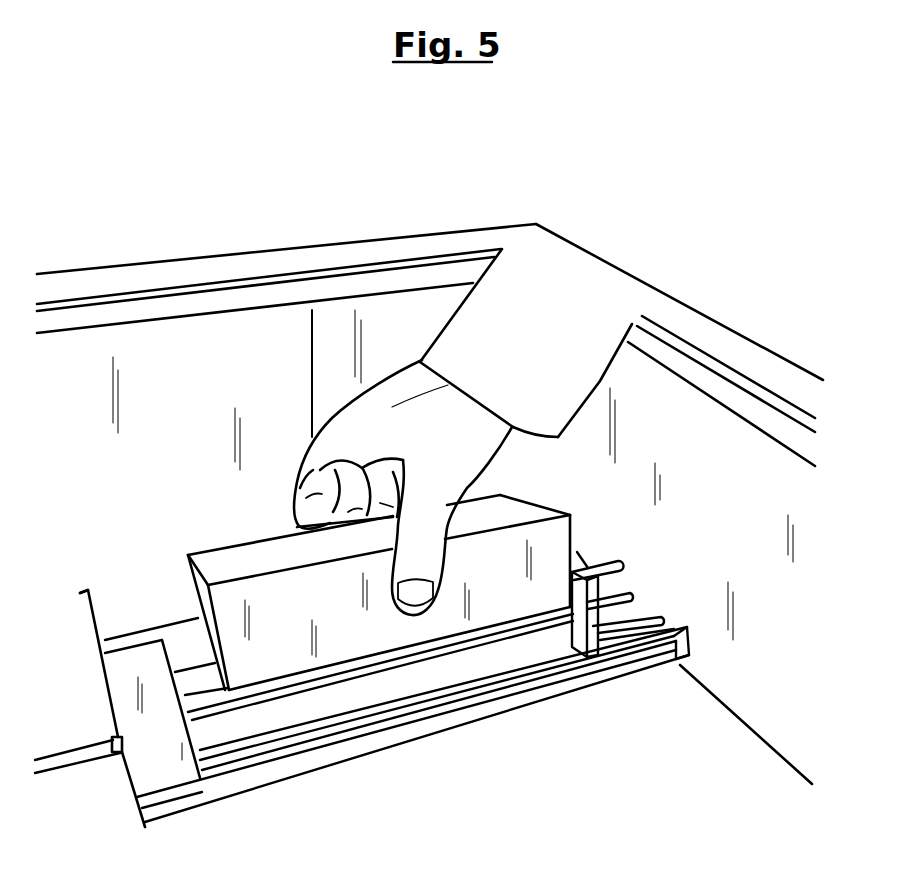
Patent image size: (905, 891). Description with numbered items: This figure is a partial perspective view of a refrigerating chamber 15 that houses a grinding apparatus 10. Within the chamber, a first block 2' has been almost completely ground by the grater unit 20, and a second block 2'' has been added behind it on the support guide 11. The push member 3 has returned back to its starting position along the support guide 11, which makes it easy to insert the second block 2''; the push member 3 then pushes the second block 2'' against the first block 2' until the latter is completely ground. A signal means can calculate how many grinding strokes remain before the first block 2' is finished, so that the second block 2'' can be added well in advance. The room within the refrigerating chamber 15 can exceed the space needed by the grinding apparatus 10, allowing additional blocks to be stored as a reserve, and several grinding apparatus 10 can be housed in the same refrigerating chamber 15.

The refrigerating chamber 15 is at (237, 380).
The grinding apparatus 10 is at (145, 540).
The grater unit 20 is at (62, 633).
The support guide 11 is at (622, 612).
The push member 3 is at (582, 637).
The second block 2'' is at (379, 665).
The first block 2' is at (186, 724).